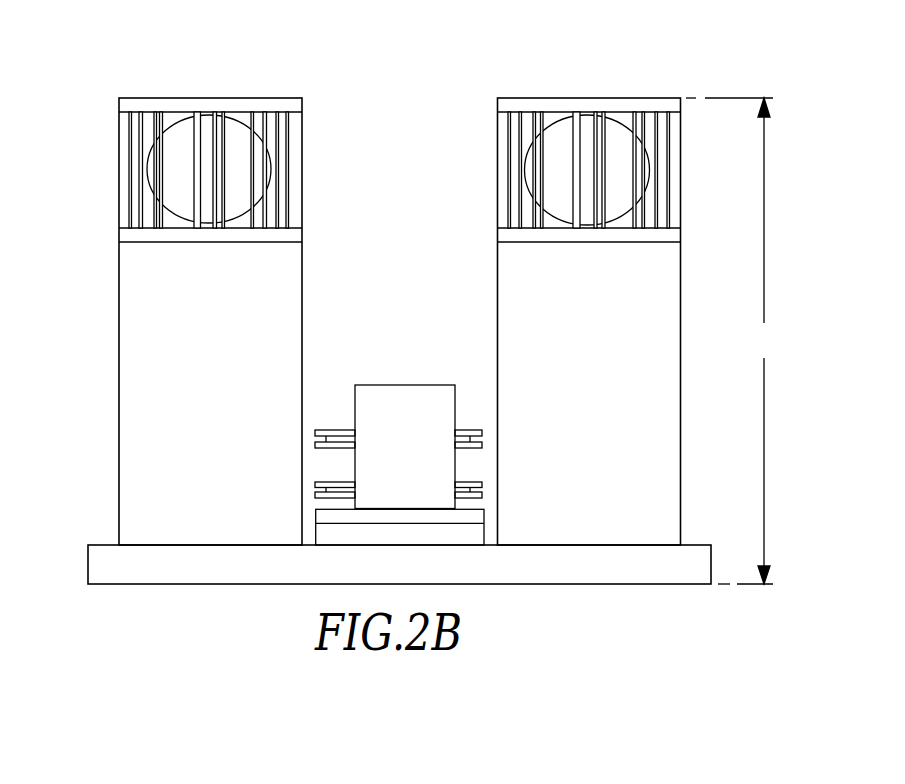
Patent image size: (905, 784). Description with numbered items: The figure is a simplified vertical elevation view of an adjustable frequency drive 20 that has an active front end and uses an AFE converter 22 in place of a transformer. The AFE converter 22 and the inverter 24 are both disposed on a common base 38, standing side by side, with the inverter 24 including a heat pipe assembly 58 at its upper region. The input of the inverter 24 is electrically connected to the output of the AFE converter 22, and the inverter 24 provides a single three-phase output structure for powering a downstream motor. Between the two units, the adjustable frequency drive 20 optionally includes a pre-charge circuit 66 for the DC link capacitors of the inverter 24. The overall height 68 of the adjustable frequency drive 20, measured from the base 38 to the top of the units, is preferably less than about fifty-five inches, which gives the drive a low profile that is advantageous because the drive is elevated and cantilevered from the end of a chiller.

The adjustable frequency drive 20 is at (83, 172).
The active front end converter 22 is at (163, 97).
The inverter 24 is at (562, 283).
The base 38 is at (88, 562).
The heat pipe assembly 58 is at (498, 174).
The pre-charge circuit 66 is at (420, 385).
The height 68 is at (730, 341).